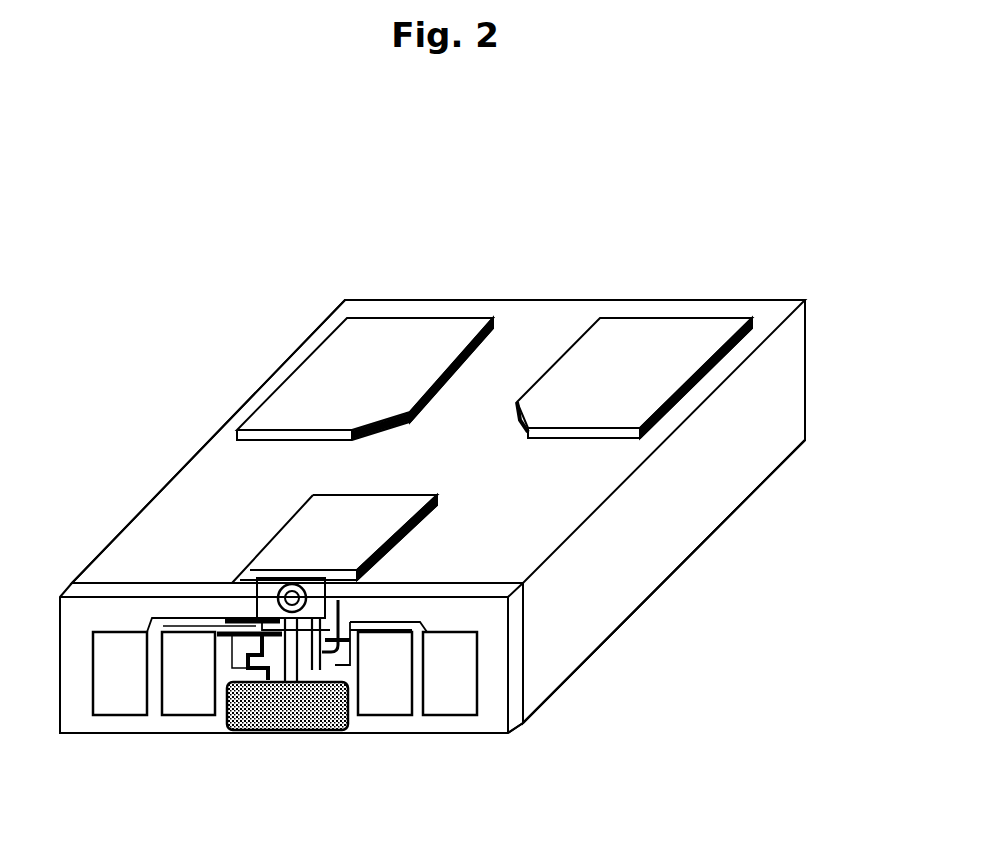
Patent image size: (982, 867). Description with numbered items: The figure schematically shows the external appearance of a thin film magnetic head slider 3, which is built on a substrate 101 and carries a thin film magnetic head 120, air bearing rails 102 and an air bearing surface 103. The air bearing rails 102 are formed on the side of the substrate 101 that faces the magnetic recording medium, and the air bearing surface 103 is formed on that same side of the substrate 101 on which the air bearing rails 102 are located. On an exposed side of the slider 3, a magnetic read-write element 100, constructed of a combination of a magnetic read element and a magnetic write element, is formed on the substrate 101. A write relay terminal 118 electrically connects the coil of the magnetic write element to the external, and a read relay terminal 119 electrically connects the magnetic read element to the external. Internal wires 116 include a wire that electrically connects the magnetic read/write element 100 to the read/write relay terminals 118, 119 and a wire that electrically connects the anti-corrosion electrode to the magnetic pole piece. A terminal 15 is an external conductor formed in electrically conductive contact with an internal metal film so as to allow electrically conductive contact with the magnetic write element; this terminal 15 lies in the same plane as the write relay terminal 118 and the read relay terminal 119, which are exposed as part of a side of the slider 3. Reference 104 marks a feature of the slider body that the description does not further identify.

The thin film magnetic head slider 3 is at (204, 322).
The terminal 15 is at (330, 733).
The magnetic read-write element 100 is at (237, 733).
The substrate 101 is at (747, 457).
The air bearing rail 102 is at (655, 333).
The air bearing surface 103 is at (222, 483).
The package edge 104 is at (607, 433).
The internal wires 116 is at (178, 612).
The write relay terminal 118 is at (128, 702).
The read relay terminal 119 is at (377, 697).
The thin film magnetic head 120 is at (520, 727).